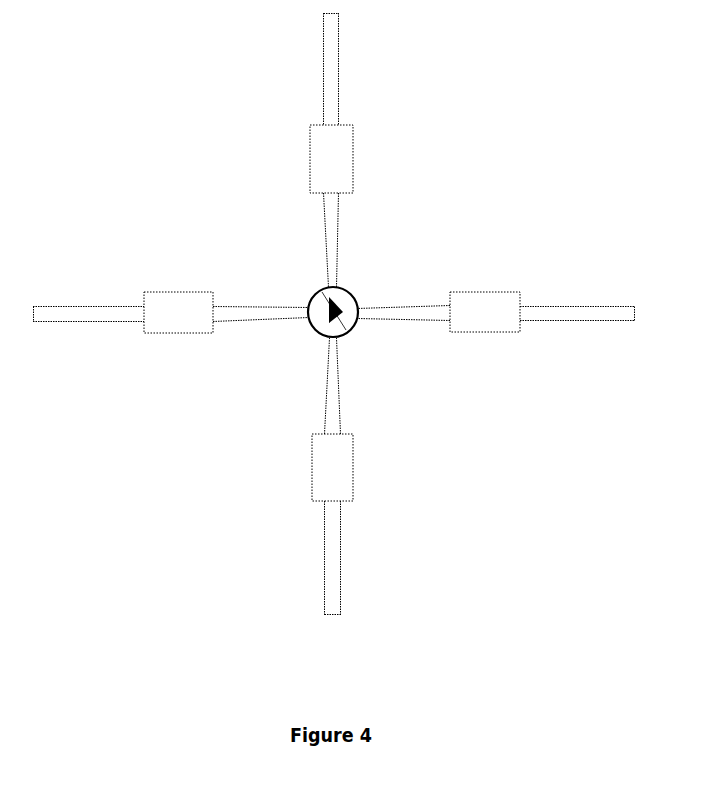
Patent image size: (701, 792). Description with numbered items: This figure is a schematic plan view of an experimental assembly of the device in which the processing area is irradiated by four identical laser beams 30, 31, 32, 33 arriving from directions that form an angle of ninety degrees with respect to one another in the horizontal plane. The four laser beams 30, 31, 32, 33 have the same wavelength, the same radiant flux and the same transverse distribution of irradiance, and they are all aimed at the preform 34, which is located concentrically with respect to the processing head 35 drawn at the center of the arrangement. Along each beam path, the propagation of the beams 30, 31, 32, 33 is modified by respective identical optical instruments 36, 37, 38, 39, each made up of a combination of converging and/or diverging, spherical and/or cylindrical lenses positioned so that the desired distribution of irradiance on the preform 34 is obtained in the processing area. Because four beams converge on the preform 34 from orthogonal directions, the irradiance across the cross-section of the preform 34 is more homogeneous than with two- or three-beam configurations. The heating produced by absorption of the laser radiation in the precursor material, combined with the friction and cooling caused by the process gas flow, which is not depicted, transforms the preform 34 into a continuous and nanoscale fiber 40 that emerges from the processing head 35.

The laser beam 30 is at (320, 80).
The laser beam 31 is at (601, 301).
The laser beam 32 is at (341, 578).
The laser beam 33 is at (52, 304).
The preform 34 is at (328, 325).
The processing head 35 is at (354, 295).
The optical instrument 36 is at (308, 163).
The optical instrument 37 is at (470, 288).
The optical instrument 38 is at (358, 467).
The optical instrument 39 is at (194, 288).
The continuous and nanoscale fiber 40 is at (331, 305).